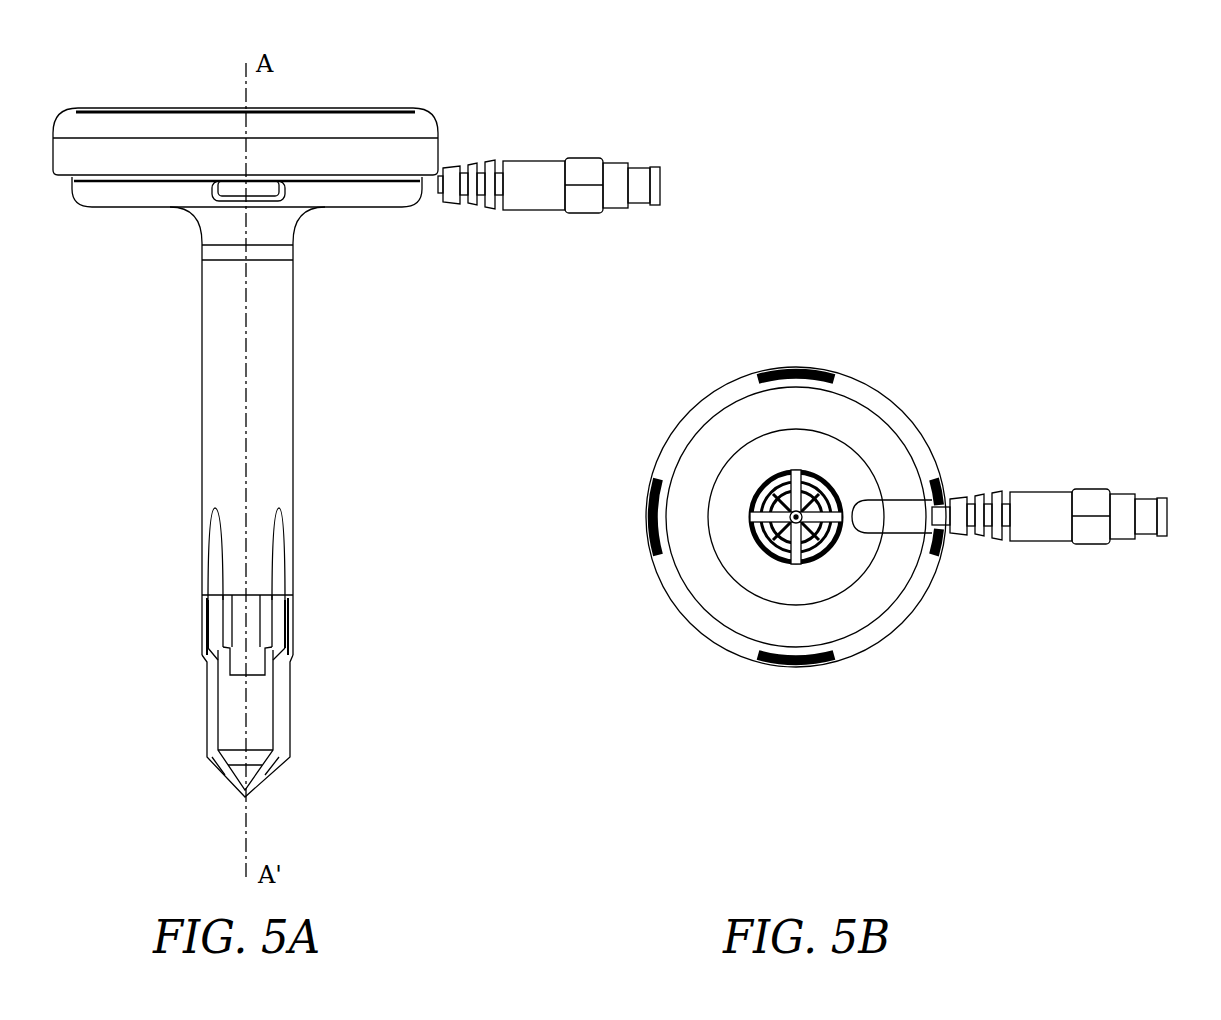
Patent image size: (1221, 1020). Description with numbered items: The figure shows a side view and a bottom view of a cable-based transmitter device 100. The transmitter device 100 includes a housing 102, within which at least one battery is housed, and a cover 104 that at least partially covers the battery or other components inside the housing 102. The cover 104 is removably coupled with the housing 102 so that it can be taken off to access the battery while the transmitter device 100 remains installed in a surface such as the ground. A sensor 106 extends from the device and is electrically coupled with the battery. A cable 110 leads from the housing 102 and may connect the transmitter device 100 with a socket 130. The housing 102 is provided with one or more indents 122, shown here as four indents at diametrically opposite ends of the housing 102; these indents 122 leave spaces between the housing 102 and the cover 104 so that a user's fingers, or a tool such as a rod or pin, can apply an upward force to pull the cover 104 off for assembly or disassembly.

In FIG. 5A, the transmitter device 100 is at (578, 91).
In FIG. 5A, the housing 102 is at (334, 222).
In FIG. 5B, the housing 102 is at (1024, 252).
In FIG. 5A, the cover 104 is at (366, 93).
In FIG. 5A, the sensor 106 is at (298, 627).
In FIG. 5A, the cable 110 is at (430, 196).
In FIG. 5B, the cable 110 is at (951, 535).
In FIG. 5A, the indents 122 is at (207, 198).
In FIG. 5B, the indents 122 is at (647, 524).
In FIG. 5A, the socket 130 is at (583, 198).
In FIG. 5B, the socket 130 is at (1095, 529).